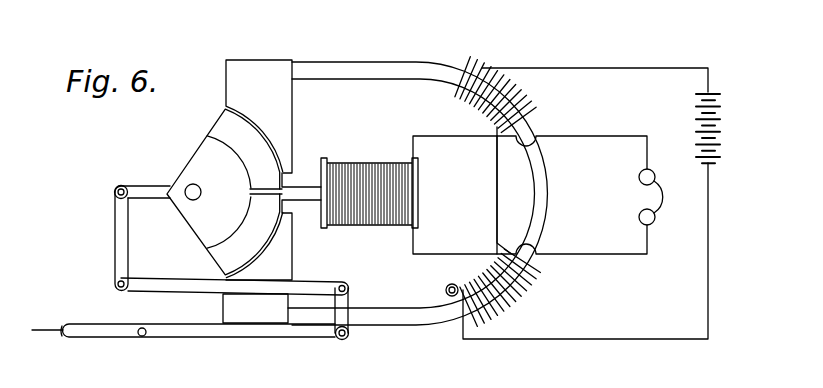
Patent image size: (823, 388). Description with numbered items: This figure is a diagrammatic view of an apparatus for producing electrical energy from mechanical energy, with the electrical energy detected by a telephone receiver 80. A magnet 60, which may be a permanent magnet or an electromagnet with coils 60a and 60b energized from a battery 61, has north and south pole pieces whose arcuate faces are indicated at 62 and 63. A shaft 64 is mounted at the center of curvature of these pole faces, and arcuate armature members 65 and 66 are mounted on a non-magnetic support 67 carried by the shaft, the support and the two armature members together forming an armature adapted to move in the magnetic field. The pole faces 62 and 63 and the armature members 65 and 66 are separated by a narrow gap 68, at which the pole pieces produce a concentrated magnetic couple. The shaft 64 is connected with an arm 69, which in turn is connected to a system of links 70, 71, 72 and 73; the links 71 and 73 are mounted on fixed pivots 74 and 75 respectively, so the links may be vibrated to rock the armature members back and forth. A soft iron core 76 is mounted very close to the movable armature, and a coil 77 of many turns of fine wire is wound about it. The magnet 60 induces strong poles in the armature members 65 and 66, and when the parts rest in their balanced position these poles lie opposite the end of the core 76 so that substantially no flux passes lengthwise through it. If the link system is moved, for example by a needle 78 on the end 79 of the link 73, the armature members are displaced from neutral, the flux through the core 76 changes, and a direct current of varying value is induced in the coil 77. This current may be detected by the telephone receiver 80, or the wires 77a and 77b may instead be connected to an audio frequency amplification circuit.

The magnet 60 is at (376, 62).
The coil 60a is at (520, 102).
The coil 60b is at (516, 290).
The battery 61 is at (700, 144).
The arcuate face of north pole piece 62 is at (280, 134).
The arcuate face of south pole piece 63 is at (268, 247).
The shaft 64 is at (223, 192).
The arcuate armature member 65 is at (232, 162).
The arcuate armature member 66 is at (234, 222).
The non-magnetic support 67 is at (209, 192).
The gap 68 is at (258, 195).
The arm 69 is at (150, 200).
The link 70 is at (115, 245).
The link 71 is at (182, 288).
The link 72 is at (349, 324).
The link 73 is at (230, 338).
The fixed pivot 74 is at (452, 284).
The fixed pivot 75 is at (141, 337).
The soft iron core 76 is at (297, 185).
The coil 77 is at (368, 171).
The wire 77a is at (588, 137).
The wire 77b is at (586, 256).
The needle 78 is at (44, 326).
The end of link 79 is at (62, 339).
The telephone receiver 80 is at (639, 214).